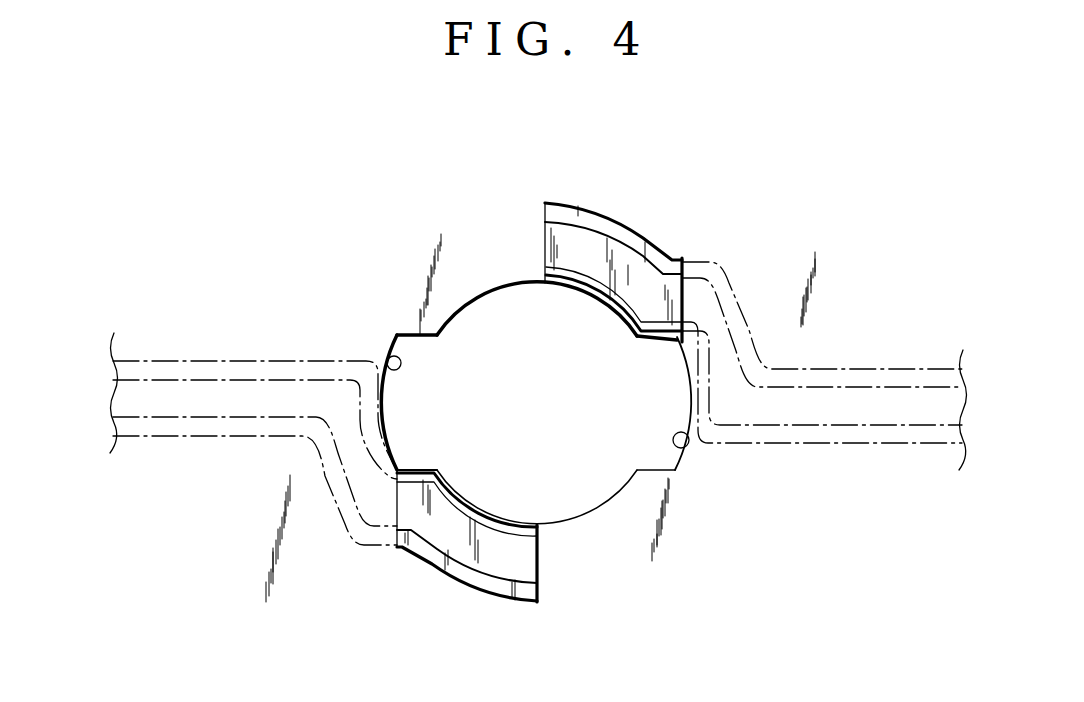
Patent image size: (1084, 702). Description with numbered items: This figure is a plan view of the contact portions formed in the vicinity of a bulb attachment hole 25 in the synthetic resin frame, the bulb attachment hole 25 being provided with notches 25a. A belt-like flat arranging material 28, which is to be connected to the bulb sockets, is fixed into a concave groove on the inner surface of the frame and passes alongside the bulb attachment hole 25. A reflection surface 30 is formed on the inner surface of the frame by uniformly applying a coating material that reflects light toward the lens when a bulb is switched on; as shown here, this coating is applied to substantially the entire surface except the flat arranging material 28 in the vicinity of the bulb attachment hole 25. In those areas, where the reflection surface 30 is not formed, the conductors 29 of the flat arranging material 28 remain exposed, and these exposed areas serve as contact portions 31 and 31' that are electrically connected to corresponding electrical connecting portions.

The bulb attachment hole 25 is at (570, 481).
The notch 25a is at (392, 357).
The flat arranging material 28 is at (575, 210).
The conductor 29 is at (546, 250).
The reflection surface 30 is at (200, 515).
The contact portion 31 is at (468, 599).
The contact portion 31' is at (712, 218).